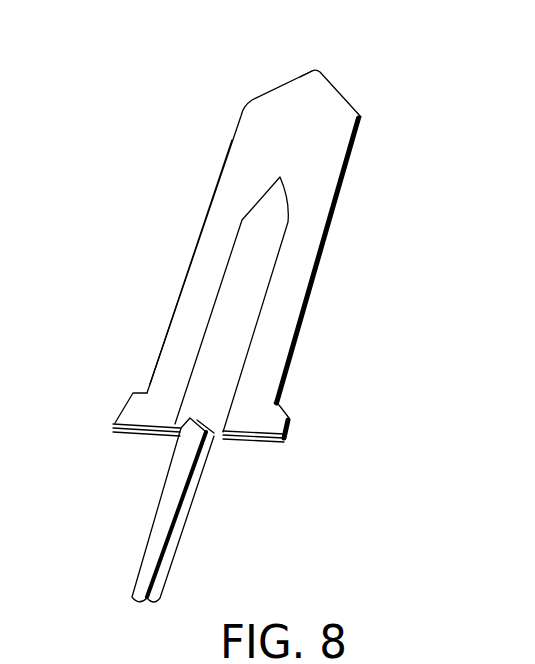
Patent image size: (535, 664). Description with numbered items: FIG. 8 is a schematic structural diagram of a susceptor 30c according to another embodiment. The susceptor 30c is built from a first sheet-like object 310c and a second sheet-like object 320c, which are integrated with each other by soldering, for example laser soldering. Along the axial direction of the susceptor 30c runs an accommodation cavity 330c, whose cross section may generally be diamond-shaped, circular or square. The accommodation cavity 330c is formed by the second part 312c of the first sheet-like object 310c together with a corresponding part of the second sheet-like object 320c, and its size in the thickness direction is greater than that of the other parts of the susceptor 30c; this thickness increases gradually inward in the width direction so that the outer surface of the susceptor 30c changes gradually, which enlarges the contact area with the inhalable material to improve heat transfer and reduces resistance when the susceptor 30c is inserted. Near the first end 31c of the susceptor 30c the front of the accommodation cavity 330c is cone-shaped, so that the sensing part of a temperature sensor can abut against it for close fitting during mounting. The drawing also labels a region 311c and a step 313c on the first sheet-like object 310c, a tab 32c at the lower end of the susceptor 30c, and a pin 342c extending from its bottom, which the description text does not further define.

The susceptor 30c is at (187, 50).
The first end 31c is at (323, 72).
The first sheet-like object 310c is at (227, 155).
The first surface 311c is at (220, 242).
The second part 312c is at (217, 328).
The notch 313c is at (152, 405).
The second sheet-like object 320c is at (330, 223).
The accommodation cavity 330c is at (180, 437).
The tab 32c is at (255, 442).
The pin 342c is at (160, 518).